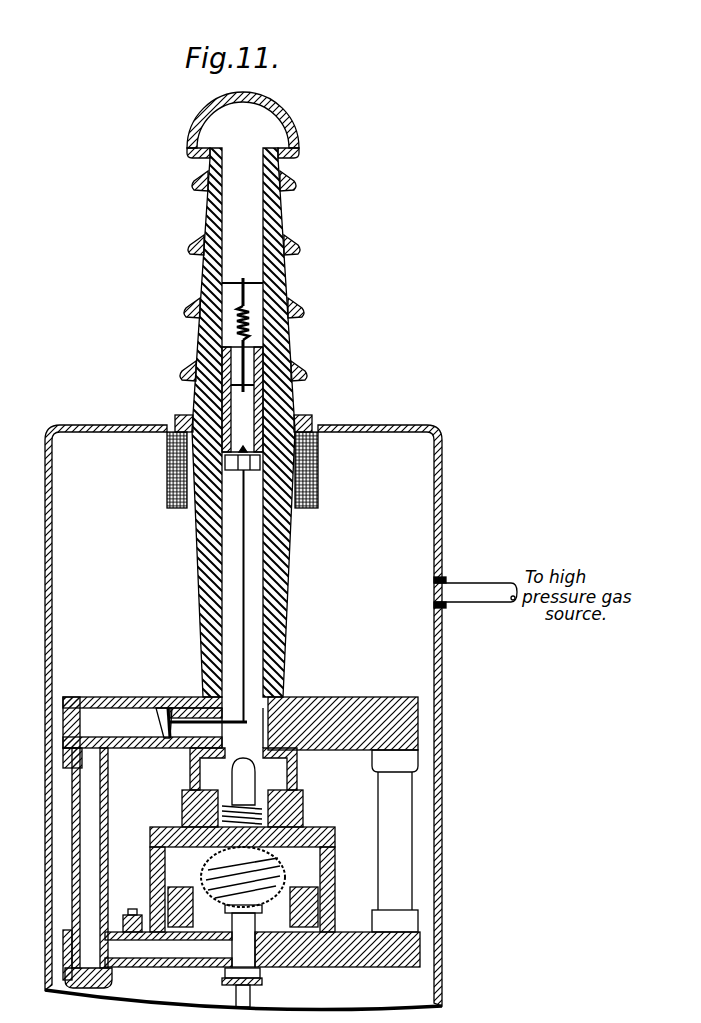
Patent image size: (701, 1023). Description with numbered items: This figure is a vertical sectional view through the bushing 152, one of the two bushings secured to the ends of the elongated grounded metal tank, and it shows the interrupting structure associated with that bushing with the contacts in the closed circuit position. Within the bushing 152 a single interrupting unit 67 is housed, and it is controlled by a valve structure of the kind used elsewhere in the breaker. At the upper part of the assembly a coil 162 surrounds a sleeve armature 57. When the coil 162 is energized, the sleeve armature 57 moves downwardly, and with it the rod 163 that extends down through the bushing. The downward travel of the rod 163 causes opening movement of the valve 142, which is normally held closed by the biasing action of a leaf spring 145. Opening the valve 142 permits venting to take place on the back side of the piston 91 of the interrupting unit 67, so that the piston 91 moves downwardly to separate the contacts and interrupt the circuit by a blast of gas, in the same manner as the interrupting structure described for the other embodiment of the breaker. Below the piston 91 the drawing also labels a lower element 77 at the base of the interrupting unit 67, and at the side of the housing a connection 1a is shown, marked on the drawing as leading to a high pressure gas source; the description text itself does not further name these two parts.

The bushing 152 is at (297, 313).
The sleeve armature 57 is at (294, 397).
The coil 162 is at (313, 468).
The rod 163 is at (292, 582).
The valve 142 is at (176, 708).
The leaf spring 145 is at (158, 712).
The interrupting unit 67 is at (158, 823).
The piston 91 is at (318, 832).
The valve stem nut 77 is at (258, 966).
The gas inlet pipe 1a is at (484, 605).